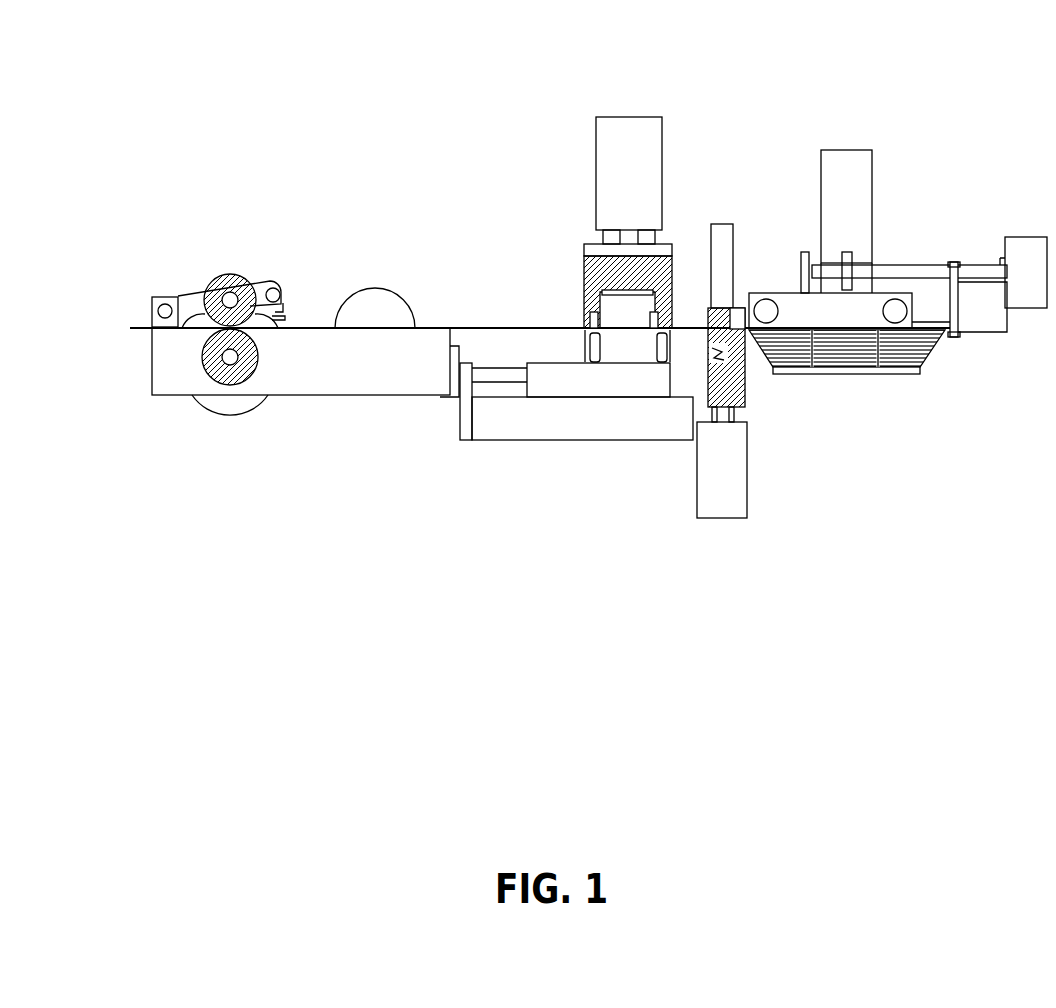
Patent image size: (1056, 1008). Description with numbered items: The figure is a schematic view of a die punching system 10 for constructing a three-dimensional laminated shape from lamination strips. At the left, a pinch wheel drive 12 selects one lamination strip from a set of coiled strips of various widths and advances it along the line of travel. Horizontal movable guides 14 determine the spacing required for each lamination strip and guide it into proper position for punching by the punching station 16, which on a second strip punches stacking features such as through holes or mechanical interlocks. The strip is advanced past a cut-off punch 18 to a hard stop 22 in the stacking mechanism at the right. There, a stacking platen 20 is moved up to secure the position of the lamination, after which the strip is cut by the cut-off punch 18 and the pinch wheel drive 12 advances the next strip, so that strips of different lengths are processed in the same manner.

The die punching system 10 is at (823, 92).
The pinch wheel drive 12 is at (235, 272).
The horizontal movable guides 14 is at (360, 323).
The punching station 16 is at (585, 270).
The cut-off punch 18 is at (745, 395).
The stacking platen 20 is at (855, 375).
The hard stop 22 is at (950, 342).